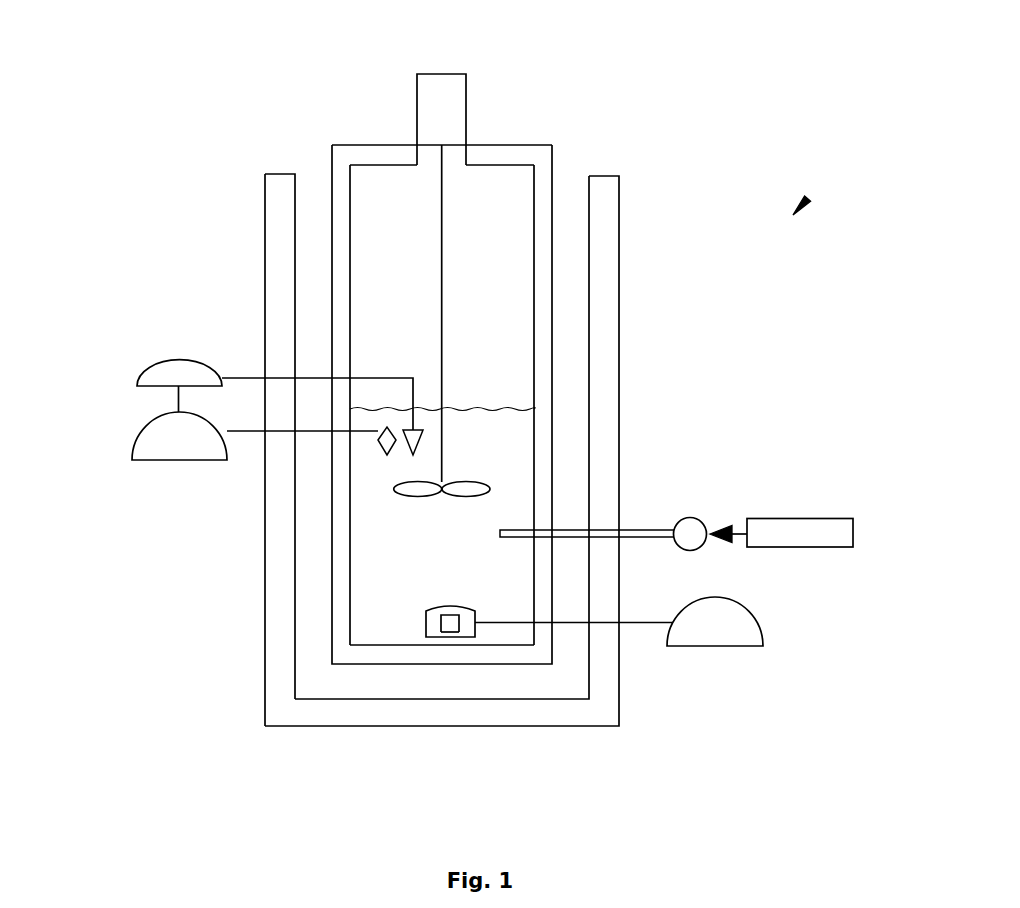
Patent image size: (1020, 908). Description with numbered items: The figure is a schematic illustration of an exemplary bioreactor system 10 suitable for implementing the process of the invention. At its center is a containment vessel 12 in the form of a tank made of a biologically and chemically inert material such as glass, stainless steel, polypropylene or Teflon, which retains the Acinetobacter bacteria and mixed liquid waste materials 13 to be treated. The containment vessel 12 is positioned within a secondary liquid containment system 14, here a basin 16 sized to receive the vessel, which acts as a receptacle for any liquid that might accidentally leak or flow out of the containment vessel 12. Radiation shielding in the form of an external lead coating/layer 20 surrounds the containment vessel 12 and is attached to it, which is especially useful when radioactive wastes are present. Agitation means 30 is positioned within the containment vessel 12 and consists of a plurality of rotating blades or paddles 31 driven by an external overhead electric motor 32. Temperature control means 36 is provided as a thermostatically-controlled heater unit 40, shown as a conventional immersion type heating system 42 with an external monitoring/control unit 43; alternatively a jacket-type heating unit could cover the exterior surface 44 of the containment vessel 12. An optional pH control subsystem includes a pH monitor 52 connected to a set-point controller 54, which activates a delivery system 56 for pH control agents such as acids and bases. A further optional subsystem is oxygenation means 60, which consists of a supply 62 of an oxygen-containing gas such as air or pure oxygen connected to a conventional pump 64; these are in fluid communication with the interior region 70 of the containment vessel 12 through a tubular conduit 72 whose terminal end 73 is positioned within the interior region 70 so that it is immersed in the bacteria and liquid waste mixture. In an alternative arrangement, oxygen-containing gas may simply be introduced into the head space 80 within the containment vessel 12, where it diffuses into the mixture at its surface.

The bioreactor system 10 is at (796, 212).
The containment vessel 12 is at (518, 219).
The bacteria and mixed liquid waste materials 13 is at (370, 576).
The secondary liquid containment system 14 is at (620, 193).
The basin 16 is at (264, 182).
The external lead coating/layer 20 is at (497, 144).
The agitation means 30 is at (407, 497).
The rotating blades or paddles 31 is at (393, 492).
The electric motor 32 is at (425, 74).
The temperature control means 36 is at (448, 632).
The heater unit 40 is at (447, 628).
The immersion type heating system 42 is at (459, 628).
The monitoring/control unit 43 is at (757, 620).
The exterior surface 44 is at (360, 144).
The pH monitor 52 is at (377, 443).
The set-point controller 54 is at (138, 438).
The delivery system 56 is at (152, 370).
The oxygenation means 60 is at (838, 528).
The supply of oxygen-containing gas 62 is at (797, 518).
The valve 64 is at (700, 518).
The interior region 70 is at (509, 397).
The tubular conduit 72 is at (625, 530).
The terminal end 73 is at (501, 530).
The head space 80 is at (477, 302).